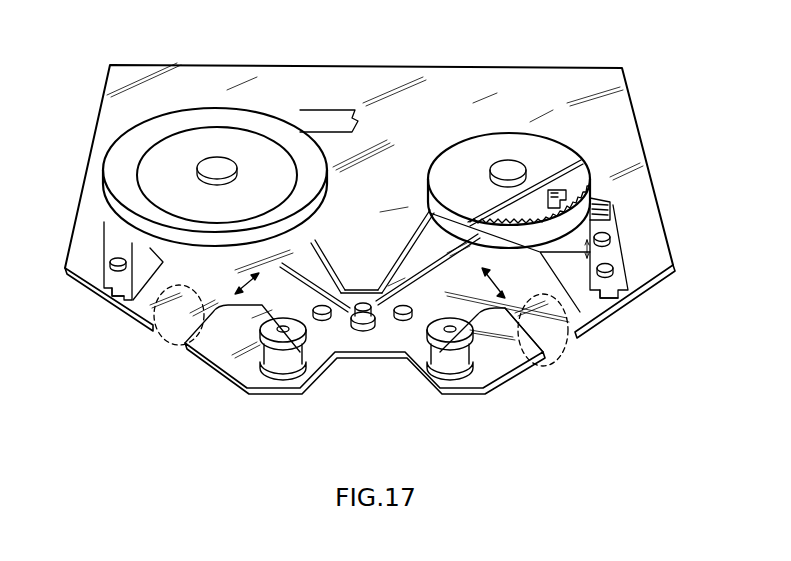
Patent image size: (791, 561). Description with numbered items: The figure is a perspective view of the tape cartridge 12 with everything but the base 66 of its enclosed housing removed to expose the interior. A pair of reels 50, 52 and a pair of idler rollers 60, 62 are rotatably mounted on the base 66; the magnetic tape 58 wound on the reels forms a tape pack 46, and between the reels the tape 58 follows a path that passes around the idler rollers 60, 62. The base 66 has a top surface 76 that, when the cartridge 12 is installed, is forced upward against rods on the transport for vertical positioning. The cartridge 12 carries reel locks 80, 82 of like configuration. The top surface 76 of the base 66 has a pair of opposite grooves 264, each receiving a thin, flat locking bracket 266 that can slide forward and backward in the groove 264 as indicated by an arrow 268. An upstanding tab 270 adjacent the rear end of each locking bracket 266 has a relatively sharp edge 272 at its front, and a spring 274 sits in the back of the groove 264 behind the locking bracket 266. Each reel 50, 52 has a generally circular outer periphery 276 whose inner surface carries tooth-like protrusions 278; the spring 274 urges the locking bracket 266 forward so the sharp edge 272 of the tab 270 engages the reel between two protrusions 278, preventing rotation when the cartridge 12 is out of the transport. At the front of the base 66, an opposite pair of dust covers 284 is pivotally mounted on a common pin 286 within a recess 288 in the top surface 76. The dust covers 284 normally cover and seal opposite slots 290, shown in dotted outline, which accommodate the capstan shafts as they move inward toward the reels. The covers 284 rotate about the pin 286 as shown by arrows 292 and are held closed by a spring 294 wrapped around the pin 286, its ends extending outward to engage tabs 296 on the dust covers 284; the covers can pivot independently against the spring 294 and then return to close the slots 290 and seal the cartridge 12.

The tape cartridge 12 is at (641, 93).
The tape pack 46 is at (149, 122).
The reel 50 is at (207, 134).
The reel 52 is at (505, 142).
The magnetic tape 58 is at (317, 115).
The idler roller 60 is at (288, 357).
The idler roller 62 is at (460, 356).
The base 66 is at (641, 133).
The top surface 76 is at (497, 353).
The reel lock 80 is at (103, 268).
The reel lock 82 is at (638, 266).
The groove 264 is at (119, 295).
The locking bracket 266 is at (108, 242).
The arrow 268 is at (613, 225).
The upstanding tab 270 is at (553, 190).
The sharp edge 272 is at (593, 188).
The spring 274 is at (612, 202).
The outer periphery 276 is at (418, 232).
The tooth-like protrusions 278 is at (493, 219).
The dust cover 284 is at (391, 262).
The common pin 286 is at (382, 308).
The recess 288 is at (307, 259).
The slot 290 is at (165, 342).
The arrow 292 is at (243, 285).
The spring 294 is at (337, 353).
The tab 296 is at (314, 308).